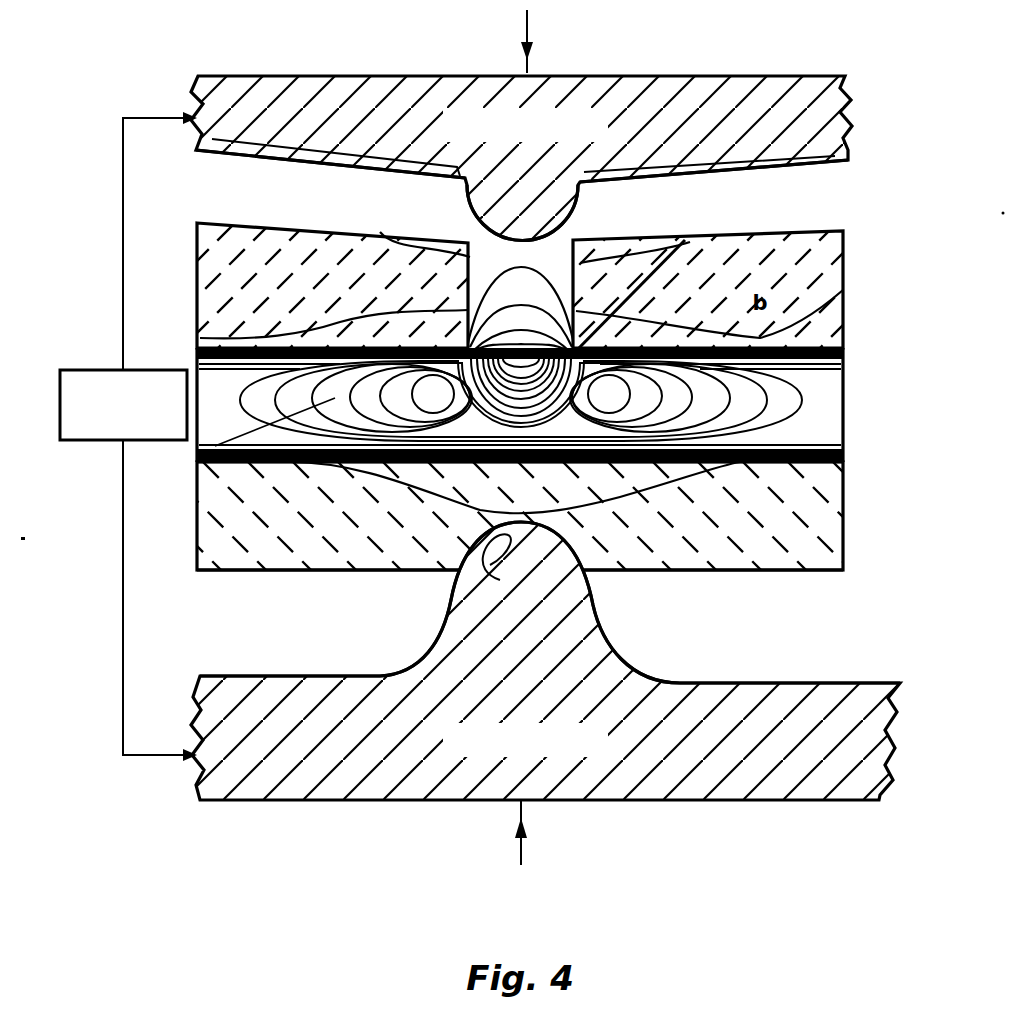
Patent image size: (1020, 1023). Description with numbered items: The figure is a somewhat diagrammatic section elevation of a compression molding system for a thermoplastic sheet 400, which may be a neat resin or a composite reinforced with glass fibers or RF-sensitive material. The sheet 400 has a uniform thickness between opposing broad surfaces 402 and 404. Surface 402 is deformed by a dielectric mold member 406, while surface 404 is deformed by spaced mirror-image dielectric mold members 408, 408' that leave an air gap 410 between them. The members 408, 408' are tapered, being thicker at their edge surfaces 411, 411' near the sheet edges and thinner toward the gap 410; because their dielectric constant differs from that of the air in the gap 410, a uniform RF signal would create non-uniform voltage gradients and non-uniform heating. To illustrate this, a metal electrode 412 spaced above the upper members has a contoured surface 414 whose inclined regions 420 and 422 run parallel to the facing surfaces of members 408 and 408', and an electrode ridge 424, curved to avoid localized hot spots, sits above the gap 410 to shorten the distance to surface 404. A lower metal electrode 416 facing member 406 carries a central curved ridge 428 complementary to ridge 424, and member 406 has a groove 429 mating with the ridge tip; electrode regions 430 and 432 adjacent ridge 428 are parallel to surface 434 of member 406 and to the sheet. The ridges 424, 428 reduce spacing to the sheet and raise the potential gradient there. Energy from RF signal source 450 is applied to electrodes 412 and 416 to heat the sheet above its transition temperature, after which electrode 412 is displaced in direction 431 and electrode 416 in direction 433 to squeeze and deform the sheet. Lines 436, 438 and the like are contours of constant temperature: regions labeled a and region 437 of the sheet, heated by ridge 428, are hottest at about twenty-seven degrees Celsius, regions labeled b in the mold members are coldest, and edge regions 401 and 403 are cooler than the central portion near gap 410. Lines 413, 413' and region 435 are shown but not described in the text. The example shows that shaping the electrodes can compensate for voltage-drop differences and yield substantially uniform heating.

The thermoplastic sheet 400 is at (845, 399).
The region adjacent sheet edge 401 is at (215, 378).
The broad surface 402 is at (845, 452).
The region adjacent sheet edge 403 is at (845, 383).
The broad surface 404 is at (843, 307).
The dielectric mold member 406 is at (237, 560).
The dielectric mold member 408 is at (681, 226).
The dielectric mold member 408' is at (334, 259).
The air gap 410 is at (550, 263).
The edge surface 411 is at (716, 290).
The edge surface 411' is at (330, 269).
The metal electrode 412 is at (846, 112).
The diagonal boundary line in right block 413 is at (644, 278).
The boundary line in left block 413' is at (411, 229).
The contoured shaped surface 414 is at (810, 163).
The metal electrode 416 is at (832, 768).
The inclined region 420 is at (704, 158).
The inclined region 422 is at (316, 152).
The electrode ridge 424 is at (470, 220).
The central curved ridge 428 is at (598, 628).
The groove 429 is at (490, 565).
The electrode region 430 is at (760, 682).
The displacement direction 431 is at (535, 14).
The electrode region 432 is at (315, 676).
The displacement direction 433 is at (528, 848).
The surface of mold member 434 is at (322, 568).
The field boundary in lower block 435 is at (500, 499).
The constant temperature line 436 is at (846, 435).
The sheet region 437 is at (500, 440).
The constant temperature line 438 is at (197, 462).
The RF signal source 450 is at (100, 370).